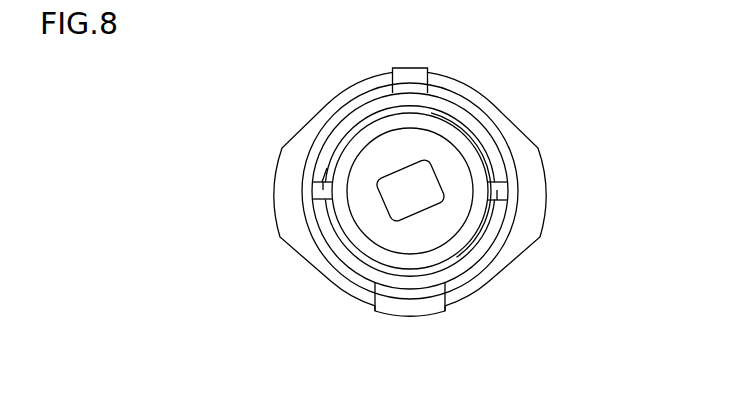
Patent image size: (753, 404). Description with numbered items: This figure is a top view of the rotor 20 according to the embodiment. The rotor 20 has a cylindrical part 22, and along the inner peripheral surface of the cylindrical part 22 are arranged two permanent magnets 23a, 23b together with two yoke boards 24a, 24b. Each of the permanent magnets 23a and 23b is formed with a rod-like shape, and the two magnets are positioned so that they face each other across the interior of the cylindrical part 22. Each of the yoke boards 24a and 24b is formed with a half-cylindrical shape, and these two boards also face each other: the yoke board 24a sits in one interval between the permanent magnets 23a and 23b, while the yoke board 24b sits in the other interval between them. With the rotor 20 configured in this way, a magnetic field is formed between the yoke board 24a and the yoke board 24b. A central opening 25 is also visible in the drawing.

The rotor 20 is at (271, 39).
The cylindrical part 22 is at (526, 144).
The permanent magnet 23a is at (312, 189).
The permanent magnet 23b is at (508, 189).
The yoke board 24a is at (400, 284).
The yoke board 24b is at (413, 95).
The terminal opening 25 is at (433, 212).